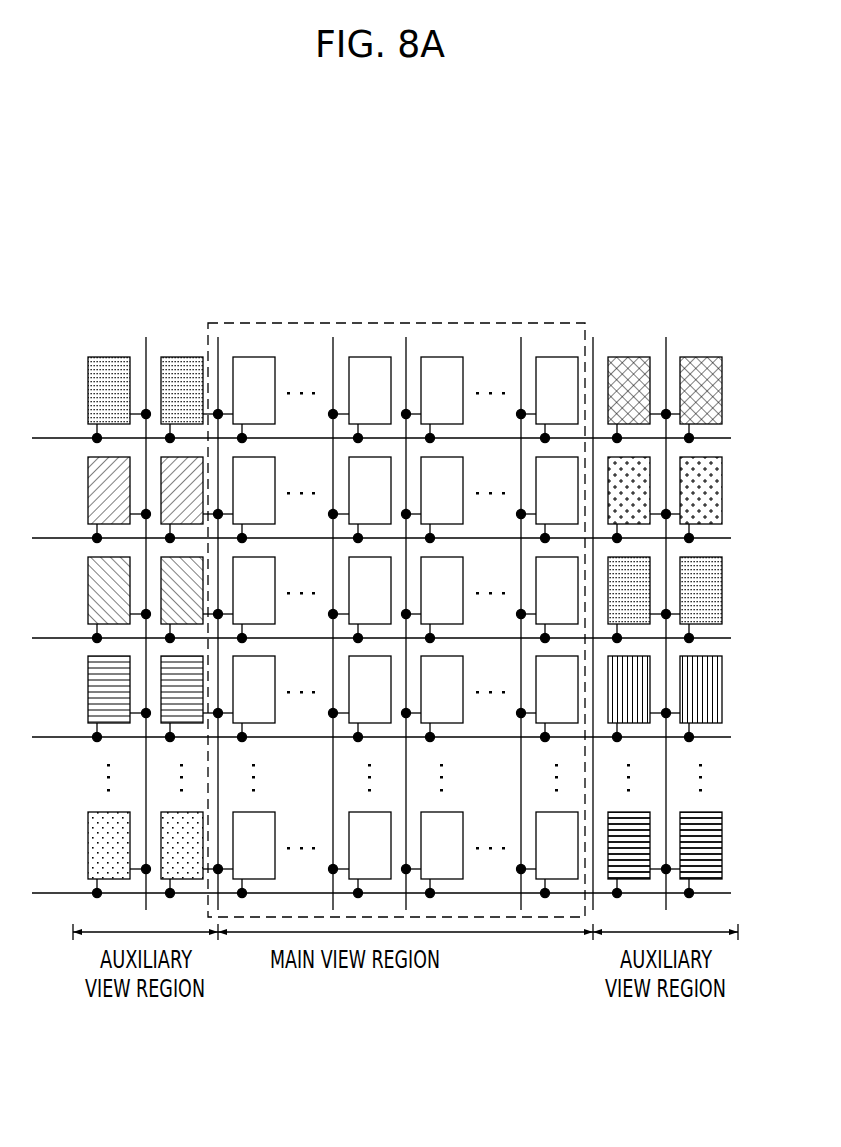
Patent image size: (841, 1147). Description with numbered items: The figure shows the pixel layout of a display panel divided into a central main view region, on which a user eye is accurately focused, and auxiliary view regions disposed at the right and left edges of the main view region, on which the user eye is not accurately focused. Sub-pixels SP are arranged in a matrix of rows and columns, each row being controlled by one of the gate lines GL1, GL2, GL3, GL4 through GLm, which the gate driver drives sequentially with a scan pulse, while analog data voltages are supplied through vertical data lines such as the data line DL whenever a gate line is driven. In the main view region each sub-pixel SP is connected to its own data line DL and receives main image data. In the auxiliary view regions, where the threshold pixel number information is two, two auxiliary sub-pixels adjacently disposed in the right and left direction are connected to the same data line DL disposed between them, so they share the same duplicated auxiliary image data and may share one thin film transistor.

The data line DL is at (149, 610).
The sub-pixel SP is at (265, 405).
The first gate line GL1 is at (380, 423).
The second gate line GL2 is at (380, 523).
The third gate line GL3 is at (380, 623).
The fourth gate line GL4 is at (380, 722).
The m-th gate line GLm is at (380, 878).